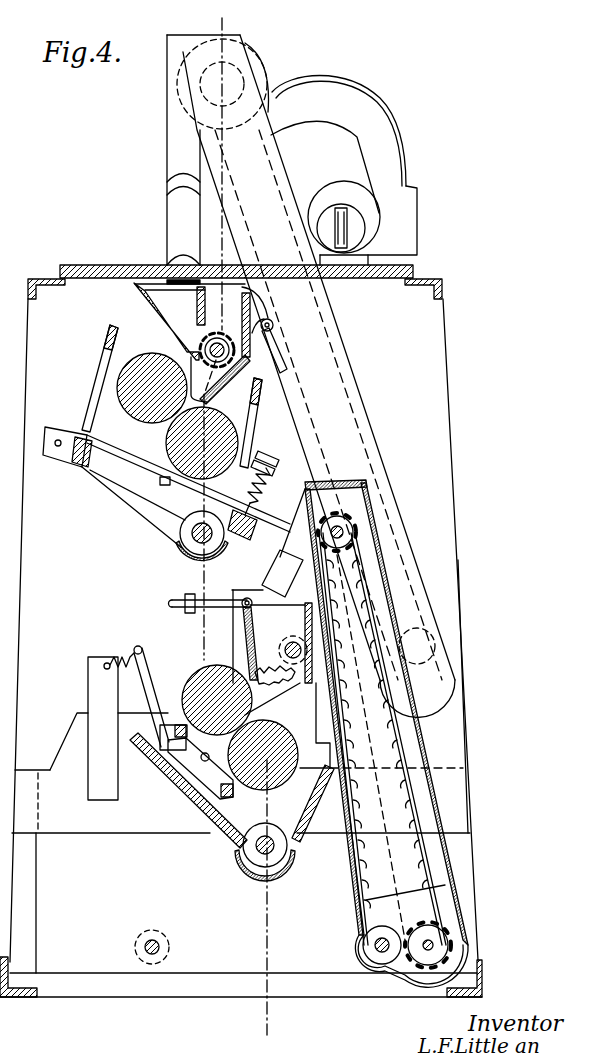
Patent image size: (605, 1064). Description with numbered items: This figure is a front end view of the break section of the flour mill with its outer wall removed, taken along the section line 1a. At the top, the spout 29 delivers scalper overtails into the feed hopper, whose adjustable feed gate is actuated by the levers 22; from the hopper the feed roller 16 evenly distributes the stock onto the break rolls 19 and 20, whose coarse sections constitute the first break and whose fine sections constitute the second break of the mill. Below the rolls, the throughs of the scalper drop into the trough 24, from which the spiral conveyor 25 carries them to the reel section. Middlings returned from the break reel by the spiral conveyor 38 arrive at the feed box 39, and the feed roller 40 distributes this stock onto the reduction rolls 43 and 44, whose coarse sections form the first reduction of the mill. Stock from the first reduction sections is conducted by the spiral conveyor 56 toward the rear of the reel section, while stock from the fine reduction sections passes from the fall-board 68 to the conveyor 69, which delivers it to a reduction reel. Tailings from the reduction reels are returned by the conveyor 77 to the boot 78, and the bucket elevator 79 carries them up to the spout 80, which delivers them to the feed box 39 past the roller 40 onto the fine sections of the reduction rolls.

The section line 1a is at (245, 528).
The spout 29 is at (167, 197).
The levers 22 is at (265, 316).
The feed roller 16 is at (225, 351).
The break roll 19 is at (127, 378).
The break roll 20 is at (176, 439).
The trough 24 is at (140, 515).
The spiral conveyor 25 is at (192, 542).
The spout 80 is at (280, 552).
The feed box 39 is at (256, 598).
The spiral conveyor 38 is at (291, 643).
The feed roller 40 is at (268, 694).
The reduction roll 43 is at (200, 673).
The reduction roll 44 is at (290, 779).
The fall-board 68 is at (213, 820).
The conveyor 69 is at (257, 853).
The spiral conveyor 56 is at (135, 945).
The bucket elevator 79 is at (420, 748).
The conveyor 77 is at (372, 945).
The boot 78 is at (397, 977).